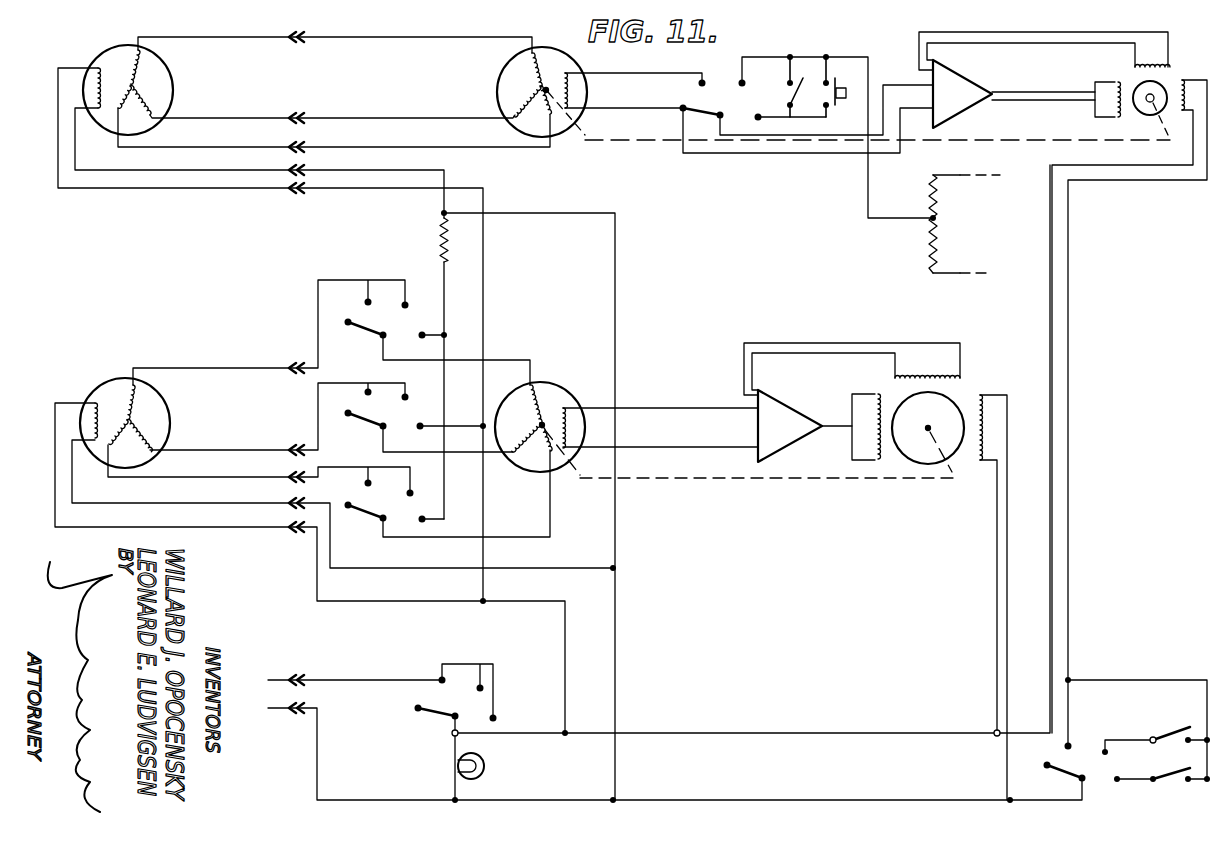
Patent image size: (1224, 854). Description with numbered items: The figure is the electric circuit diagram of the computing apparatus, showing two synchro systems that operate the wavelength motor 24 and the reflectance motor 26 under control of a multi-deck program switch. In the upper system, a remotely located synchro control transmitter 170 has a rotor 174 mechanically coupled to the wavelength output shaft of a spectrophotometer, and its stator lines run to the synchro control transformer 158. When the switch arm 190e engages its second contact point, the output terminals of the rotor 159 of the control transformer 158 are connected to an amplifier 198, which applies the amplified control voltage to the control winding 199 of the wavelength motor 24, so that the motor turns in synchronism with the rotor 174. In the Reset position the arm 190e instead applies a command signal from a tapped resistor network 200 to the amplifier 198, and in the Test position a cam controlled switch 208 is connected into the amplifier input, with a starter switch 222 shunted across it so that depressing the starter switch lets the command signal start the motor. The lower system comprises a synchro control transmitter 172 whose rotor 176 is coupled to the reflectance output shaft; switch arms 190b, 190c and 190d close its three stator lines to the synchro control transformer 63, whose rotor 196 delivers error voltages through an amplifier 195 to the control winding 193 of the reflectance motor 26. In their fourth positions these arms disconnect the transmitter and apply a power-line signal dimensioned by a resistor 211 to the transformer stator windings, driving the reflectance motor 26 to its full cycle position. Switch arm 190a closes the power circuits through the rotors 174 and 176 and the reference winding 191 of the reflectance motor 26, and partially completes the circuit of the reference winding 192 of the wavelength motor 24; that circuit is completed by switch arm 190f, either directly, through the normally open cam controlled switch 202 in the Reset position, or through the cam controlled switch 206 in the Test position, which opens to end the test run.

The synchro control transmitter 170 is at (174, 80).
The rotor 174 is at (98, 66).
The synchro control transformer 158 is at (562, 137).
The rotor 159 is at (572, 95).
The switch arm 190e is at (694, 108).
The cam controlled switch 208 is at (786, 92).
The starter switch 222 is at (838, 77).
The amplifier 198 is at (966, 108).
The control winding 199 is at (1120, 82).
The wavelength motor 24 is at (1177, 70).
The reference winding 192 is at (1178, 112).
The tapped resistor network 200 is at (940, 222).
The resistor 211 is at (440, 233).
The switch arm 190b is at (352, 326).
The switch arm 190c is at (354, 418).
The switch arm 190d is at (353, 510).
The switch arm 190a is at (424, 712).
The switch arm 190f is at (1054, 770).
The cam controlled switch 202 is at (1165, 734).
The cam controlled switch 206 is at (1176, 783).
The synchro control transformer 63 is at (558, 384).
The rotor 196 is at (572, 430).
The amplifier 195 is at (800, 444).
The control winding 193 is at (885, 396).
The reflectance motor 26 is at (970, 390).
The reference winding 191 is at (980, 462).
The synchro control transmitter 172 is at (171, 408).
The rotor 176 is at (96, 402).